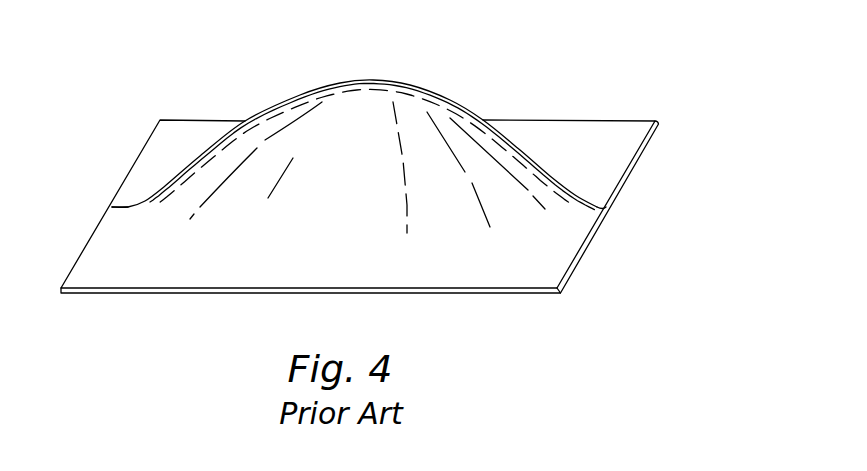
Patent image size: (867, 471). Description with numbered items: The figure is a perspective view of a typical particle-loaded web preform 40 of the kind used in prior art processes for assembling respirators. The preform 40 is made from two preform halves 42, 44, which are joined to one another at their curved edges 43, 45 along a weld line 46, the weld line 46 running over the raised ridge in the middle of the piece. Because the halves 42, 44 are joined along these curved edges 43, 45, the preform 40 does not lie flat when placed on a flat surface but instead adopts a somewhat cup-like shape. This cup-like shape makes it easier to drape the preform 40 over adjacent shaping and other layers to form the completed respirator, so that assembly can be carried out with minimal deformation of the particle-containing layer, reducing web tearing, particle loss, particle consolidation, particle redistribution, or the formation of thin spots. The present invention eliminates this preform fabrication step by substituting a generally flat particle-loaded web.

The particle-loaded web preform 40 is at (596, 114).
The preform half 42 is at (637, 133).
The curved edge 43 is at (597, 207).
The preform half 44 is at (138, 272).
The curved edge 45 is at (129, 203).
The weld line 46 is at (275, 105).